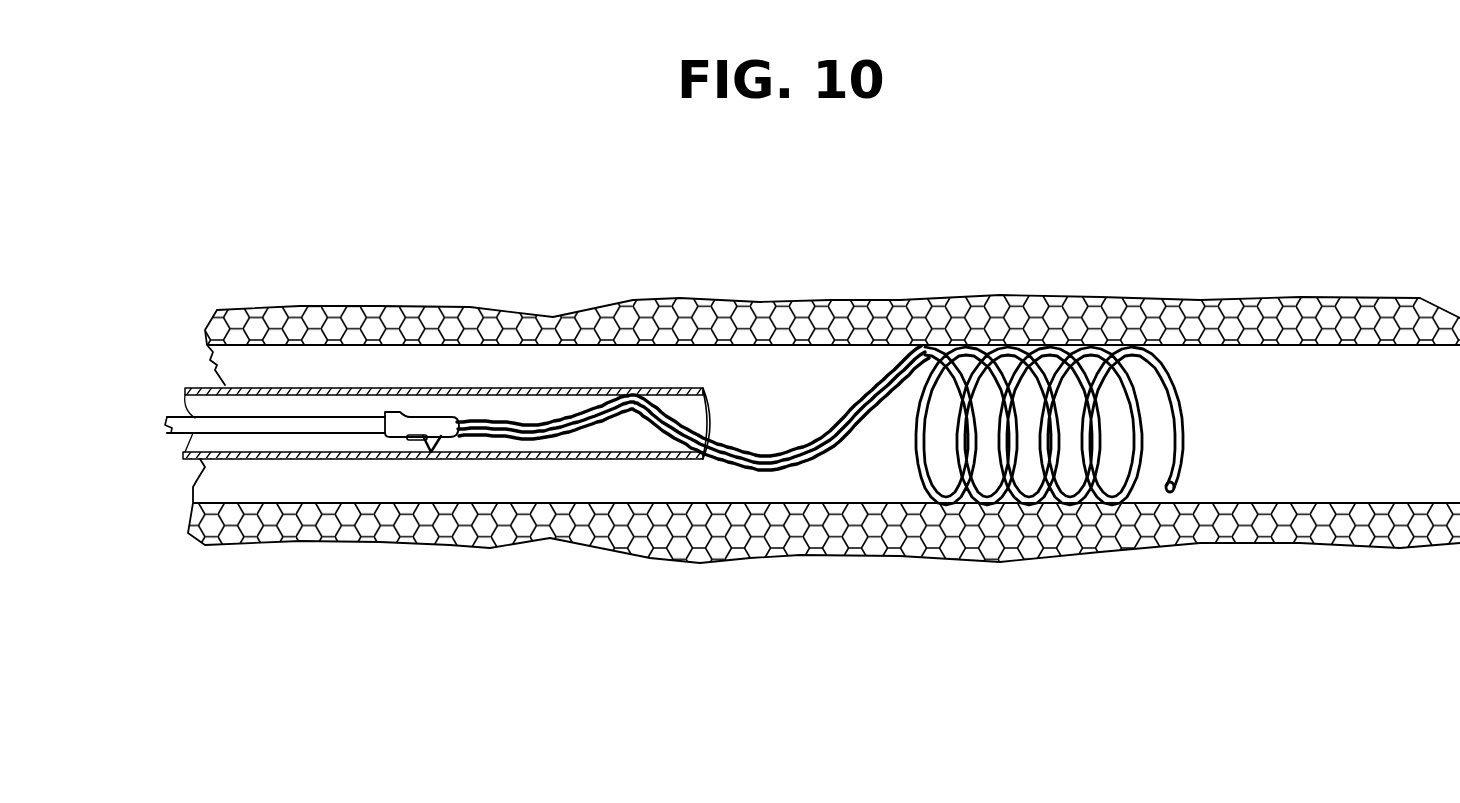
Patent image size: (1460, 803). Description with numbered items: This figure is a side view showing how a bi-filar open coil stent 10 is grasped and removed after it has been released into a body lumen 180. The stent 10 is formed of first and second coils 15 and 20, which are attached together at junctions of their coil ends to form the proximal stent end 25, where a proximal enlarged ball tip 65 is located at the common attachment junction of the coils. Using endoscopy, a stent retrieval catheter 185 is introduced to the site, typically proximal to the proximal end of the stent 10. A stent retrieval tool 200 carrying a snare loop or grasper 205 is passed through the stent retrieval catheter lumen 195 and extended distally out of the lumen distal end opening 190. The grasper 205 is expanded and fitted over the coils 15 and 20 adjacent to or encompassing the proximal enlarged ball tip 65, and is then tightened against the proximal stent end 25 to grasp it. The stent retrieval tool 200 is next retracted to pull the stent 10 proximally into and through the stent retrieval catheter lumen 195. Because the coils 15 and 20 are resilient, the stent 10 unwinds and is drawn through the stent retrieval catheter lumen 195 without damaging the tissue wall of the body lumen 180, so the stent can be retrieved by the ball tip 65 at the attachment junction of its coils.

The bi-filar open coil stent 10 is at (1192, 425).
The first coil 15 is at (742, 470).
The second coil 20 is at (800, 460).
The proximal stent end 25 is at (472, 441).
The proximal enlarged ball tip 65 is at (431, 452).
The body lumen 180 is at (1237, 478).
The stent retrieval catheter 185 is at (297, 457).
The lumen distal end opening 190 is at (698, 412).
The stent retrieval catheter lumen 195 is at (298, 407).
The stent retrieval tool 200 is at (168, 433).
The snare loop or grasper 205 is at (398, 433).